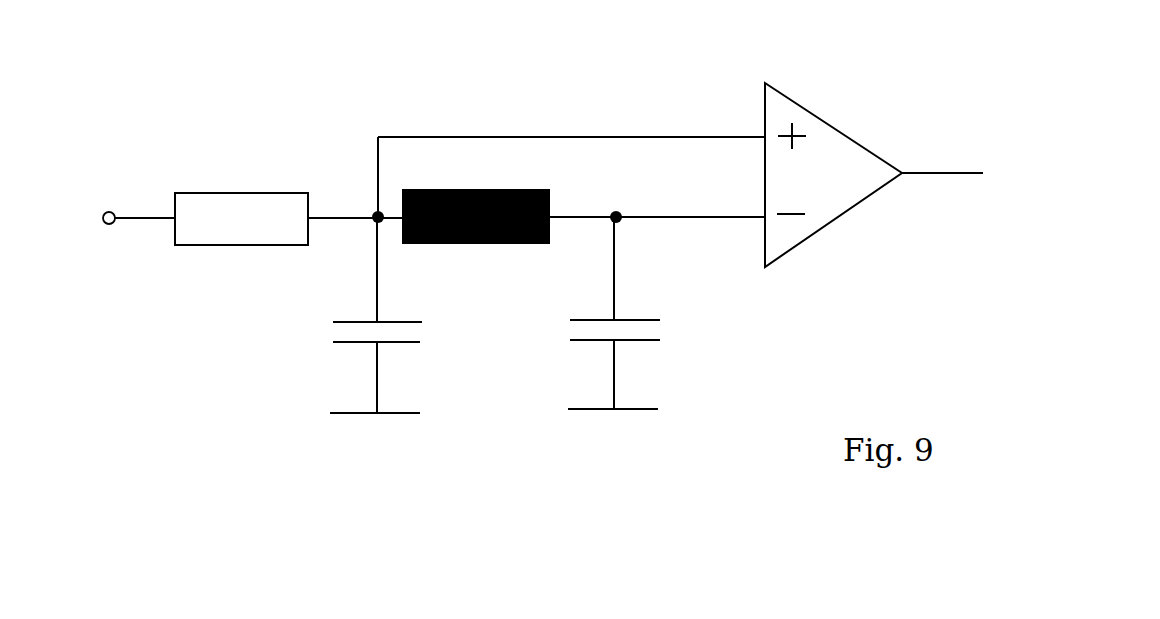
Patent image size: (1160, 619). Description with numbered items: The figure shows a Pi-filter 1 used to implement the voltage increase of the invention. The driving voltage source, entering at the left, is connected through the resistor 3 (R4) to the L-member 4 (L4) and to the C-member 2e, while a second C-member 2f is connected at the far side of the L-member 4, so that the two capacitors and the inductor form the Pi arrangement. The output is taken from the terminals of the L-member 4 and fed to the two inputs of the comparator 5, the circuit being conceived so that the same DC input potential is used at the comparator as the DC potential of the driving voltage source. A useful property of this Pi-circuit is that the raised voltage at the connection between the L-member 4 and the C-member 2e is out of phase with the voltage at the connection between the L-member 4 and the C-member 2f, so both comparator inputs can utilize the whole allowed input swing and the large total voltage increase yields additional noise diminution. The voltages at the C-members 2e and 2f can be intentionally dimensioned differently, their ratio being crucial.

The low-pass filter circuit 1 is at (491, 55).
The C-member 2e is at (400, 315).
The C-member 2f is at (641, 313).
The resistor 3 is at (246, 212).
The L-member 4 is at (507, 190).
The operational amplifier 5 is at (787, 106).